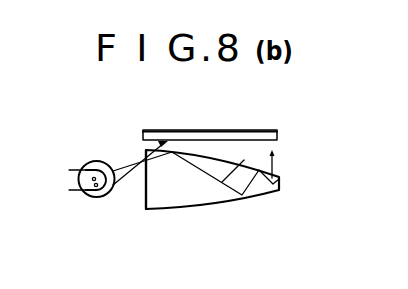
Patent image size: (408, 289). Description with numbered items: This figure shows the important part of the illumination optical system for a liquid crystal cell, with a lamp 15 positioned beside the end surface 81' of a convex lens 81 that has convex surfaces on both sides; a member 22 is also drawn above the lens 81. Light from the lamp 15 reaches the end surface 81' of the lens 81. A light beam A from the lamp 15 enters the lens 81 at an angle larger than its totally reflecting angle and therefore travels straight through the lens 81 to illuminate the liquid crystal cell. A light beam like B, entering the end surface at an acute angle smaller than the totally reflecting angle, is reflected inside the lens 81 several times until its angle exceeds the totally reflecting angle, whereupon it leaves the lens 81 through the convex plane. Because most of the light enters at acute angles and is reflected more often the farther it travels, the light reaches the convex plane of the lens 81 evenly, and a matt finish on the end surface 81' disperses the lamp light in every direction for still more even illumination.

The reflecting plate 22 is at (277, 134).
The lamp 15 is at (91, 199).
The convex lens 81 is at (212, 203).
The end surface of the lens 81' is at (144, 203).
The light beam A is at (116, 187).
The light beam B is at (243, 160).